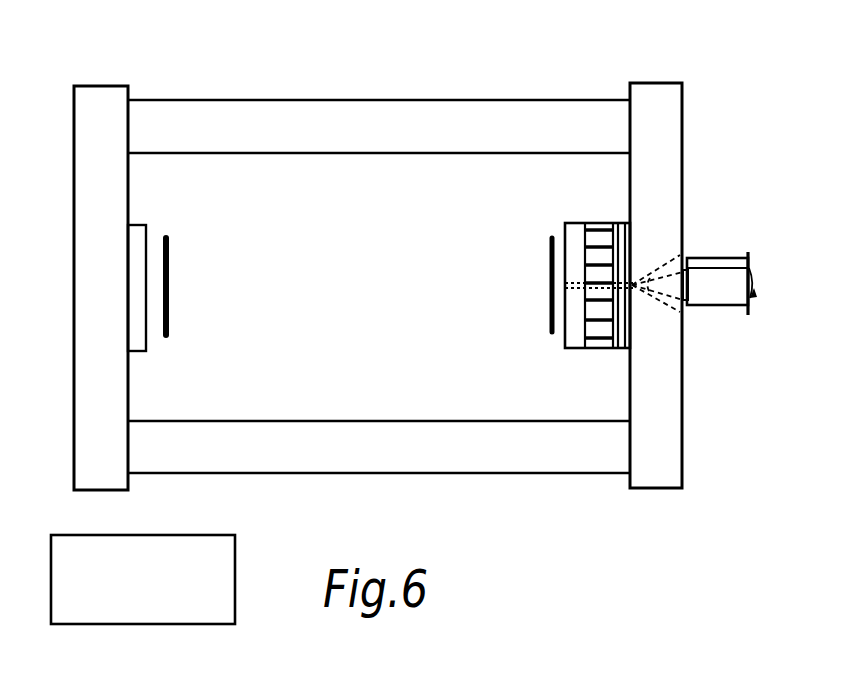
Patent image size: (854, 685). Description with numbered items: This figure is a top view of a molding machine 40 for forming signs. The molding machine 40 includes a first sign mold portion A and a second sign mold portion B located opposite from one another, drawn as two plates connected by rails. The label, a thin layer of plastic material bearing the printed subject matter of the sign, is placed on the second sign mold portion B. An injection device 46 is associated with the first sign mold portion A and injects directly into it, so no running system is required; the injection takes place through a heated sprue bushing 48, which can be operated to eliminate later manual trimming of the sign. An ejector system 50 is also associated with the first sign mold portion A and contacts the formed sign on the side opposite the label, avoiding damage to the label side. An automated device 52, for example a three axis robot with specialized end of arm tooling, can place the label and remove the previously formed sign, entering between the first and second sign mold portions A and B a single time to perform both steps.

The molding machine 40 is at (393, 24).
The injection device 46 is at (718, 258).
The heated sprue bushing 48 is at (575, 296).
The ejector system 50 is at (596, 223).
The automated device 52 is at (70, 535).
The first sign mold portion A is at (655, 45).
The second sign mold portion B is at (102, 47).